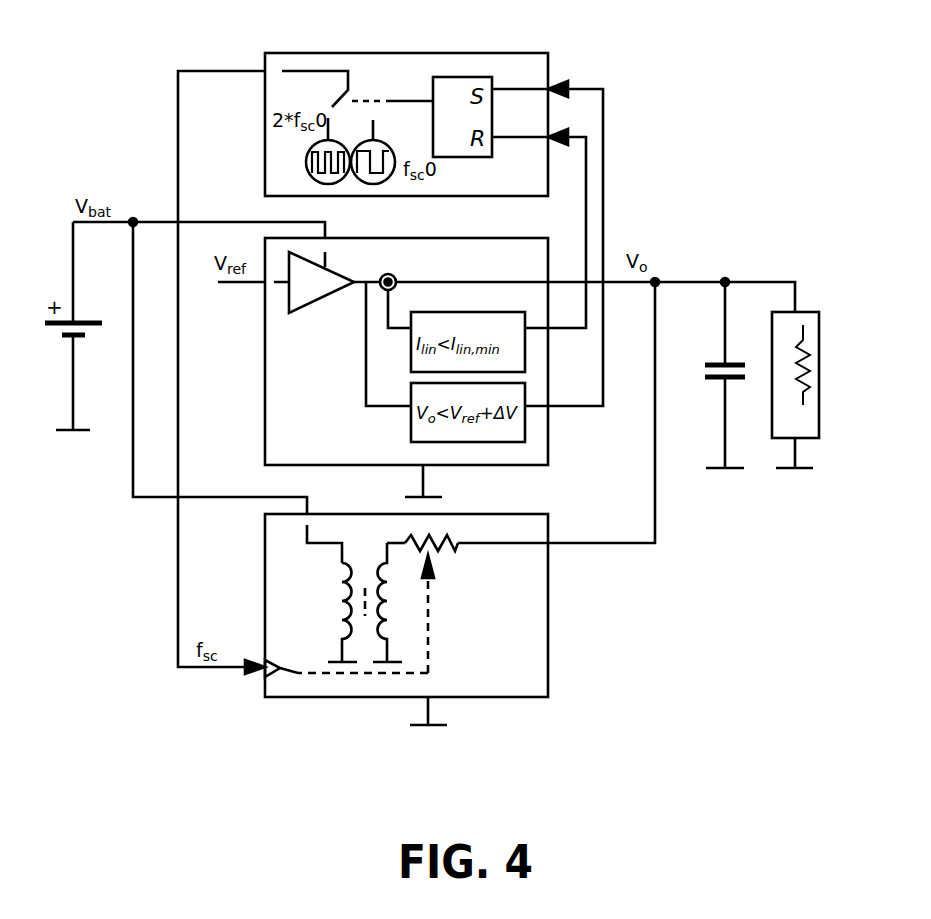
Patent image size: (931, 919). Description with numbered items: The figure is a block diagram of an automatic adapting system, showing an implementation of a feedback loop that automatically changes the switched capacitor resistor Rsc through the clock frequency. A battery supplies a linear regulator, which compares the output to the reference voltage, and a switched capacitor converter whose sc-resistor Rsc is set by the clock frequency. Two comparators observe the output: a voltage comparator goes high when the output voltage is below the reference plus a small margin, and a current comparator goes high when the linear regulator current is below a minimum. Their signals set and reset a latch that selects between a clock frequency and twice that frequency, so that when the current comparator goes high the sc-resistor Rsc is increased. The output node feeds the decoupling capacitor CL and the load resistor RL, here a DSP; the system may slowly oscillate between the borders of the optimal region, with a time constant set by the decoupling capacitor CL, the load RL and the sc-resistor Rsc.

The decoupling capacitor CL is at (719, 375).
The load resistor RL is at (795, 390).
The switched capacitor resistor Rsc is at (433, 561).